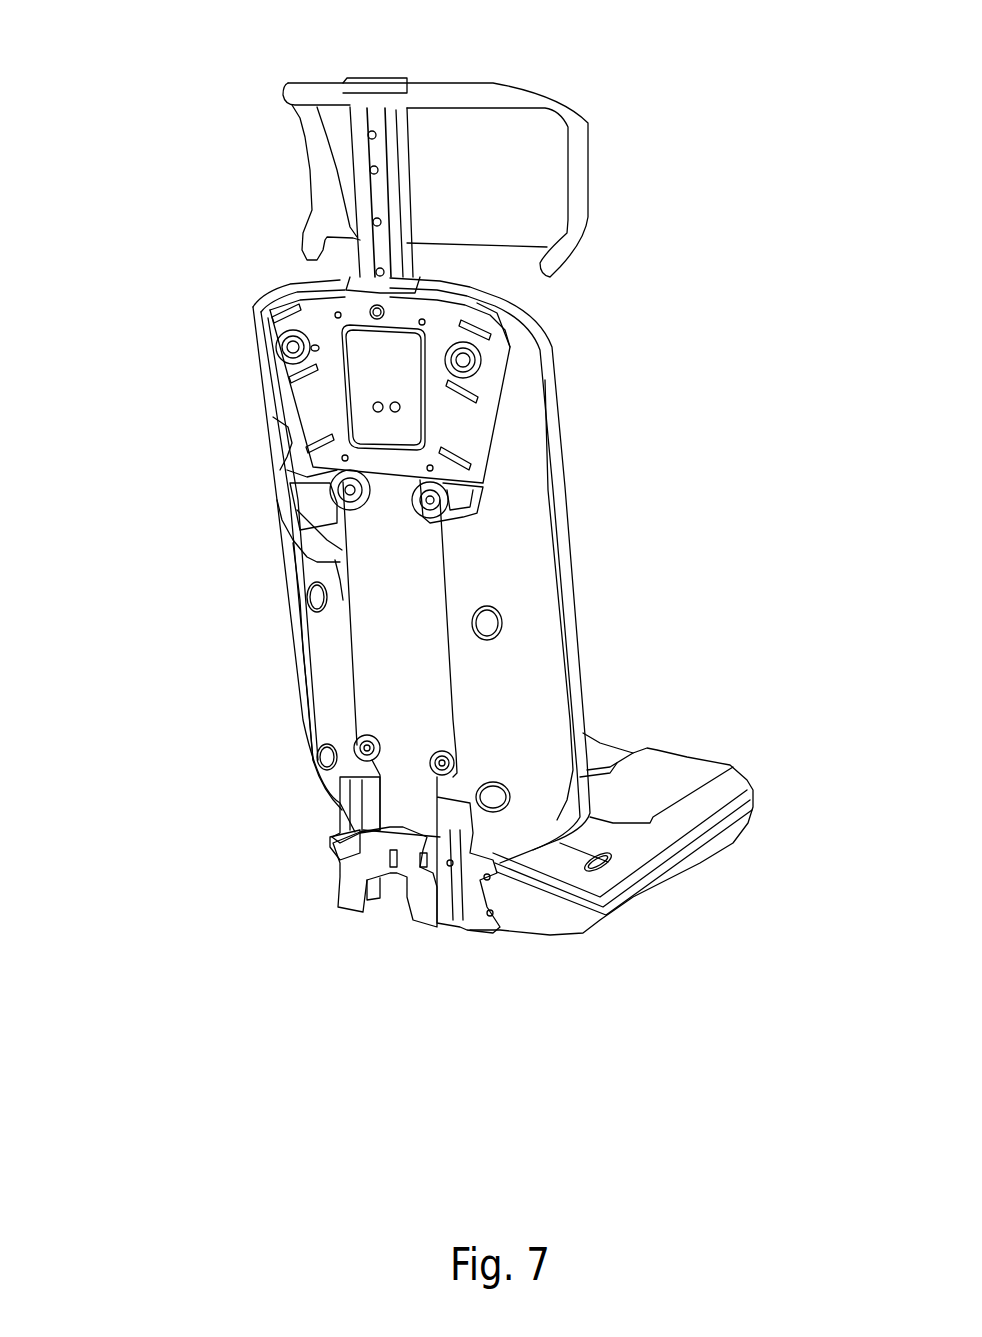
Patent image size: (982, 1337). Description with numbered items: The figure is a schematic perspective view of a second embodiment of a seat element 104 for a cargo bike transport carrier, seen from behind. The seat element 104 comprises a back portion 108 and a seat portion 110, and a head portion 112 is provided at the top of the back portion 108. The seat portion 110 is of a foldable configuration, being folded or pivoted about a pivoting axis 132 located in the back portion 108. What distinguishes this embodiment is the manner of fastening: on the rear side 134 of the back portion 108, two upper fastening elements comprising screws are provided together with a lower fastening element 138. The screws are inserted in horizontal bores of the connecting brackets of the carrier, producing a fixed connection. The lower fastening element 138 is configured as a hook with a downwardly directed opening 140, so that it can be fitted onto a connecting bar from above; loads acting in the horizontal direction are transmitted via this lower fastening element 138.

The seat element 104 is at (208, 440).
The back portion 108 is at (597, 458).
The seat portion 110 is at (682, 722).
The head portion 112 is at (595, 92).
The pivoting axis 132 is at (370, 798).
The rear side 134 is at (335, 579).
The lower fastening element 138 is at (330, 920).
The opening 140 is at (457, 937).